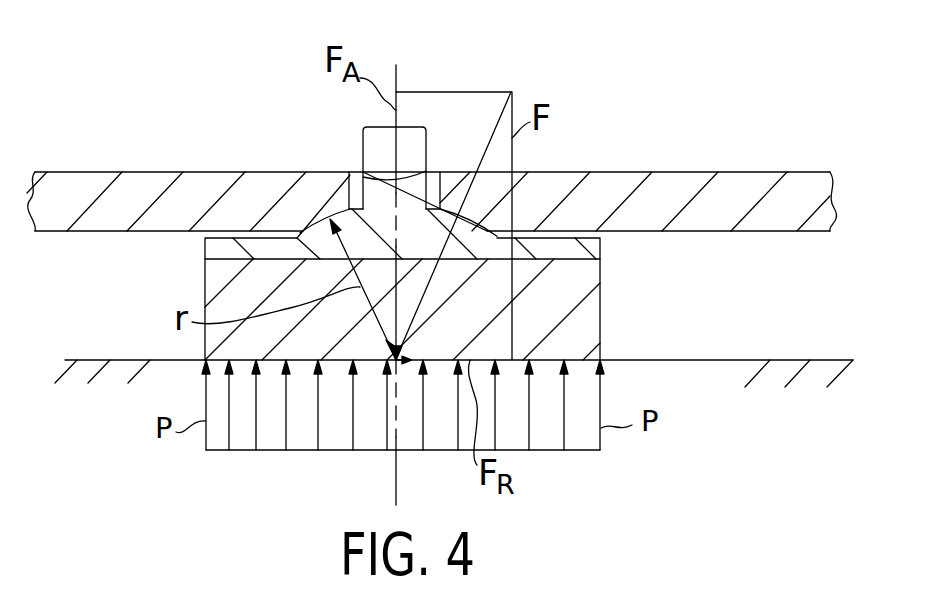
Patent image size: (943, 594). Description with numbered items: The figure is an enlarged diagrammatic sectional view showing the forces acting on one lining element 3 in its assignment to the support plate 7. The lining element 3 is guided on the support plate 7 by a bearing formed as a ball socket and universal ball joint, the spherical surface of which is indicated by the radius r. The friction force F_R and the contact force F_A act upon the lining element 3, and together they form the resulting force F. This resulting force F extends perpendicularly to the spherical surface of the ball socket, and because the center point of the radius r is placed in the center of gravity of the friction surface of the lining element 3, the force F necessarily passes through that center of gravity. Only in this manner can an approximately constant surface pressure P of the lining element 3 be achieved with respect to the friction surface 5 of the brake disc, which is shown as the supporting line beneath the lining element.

The lining element 3 is at (577, 332).
The friction surface 5 is at (670, 360).
The support plate 7 is at (612, 181).